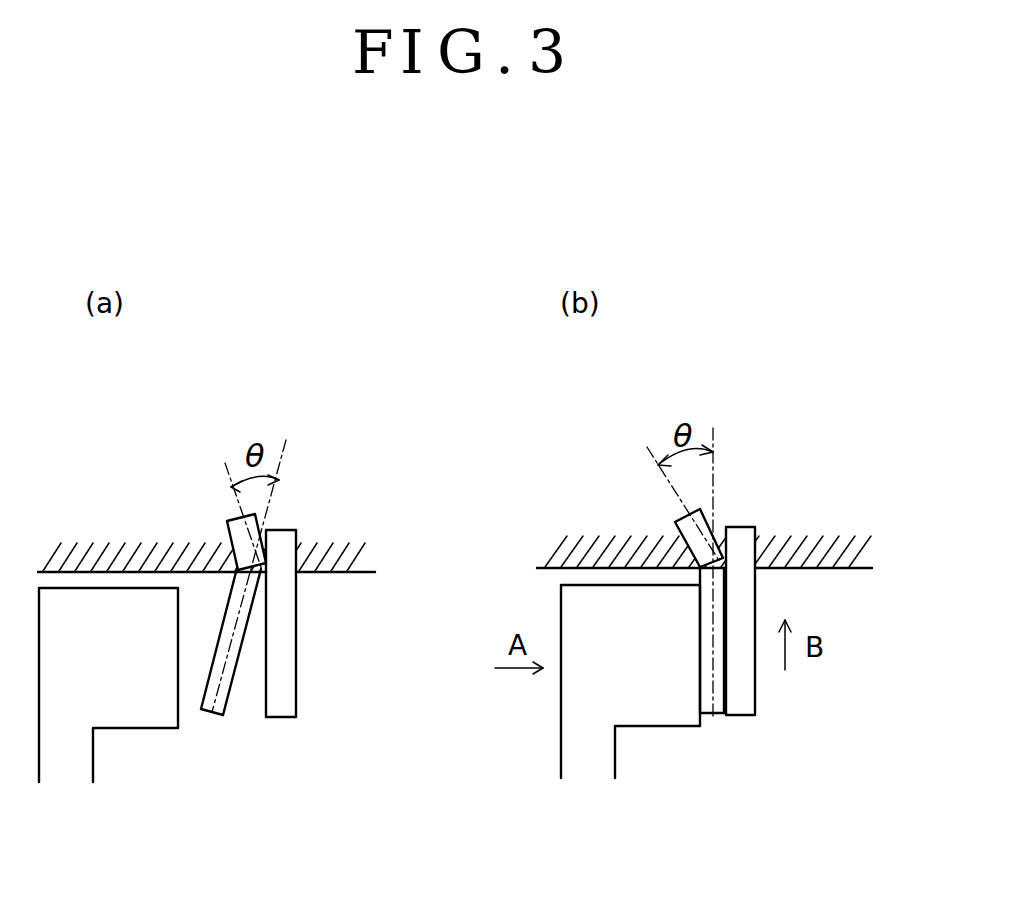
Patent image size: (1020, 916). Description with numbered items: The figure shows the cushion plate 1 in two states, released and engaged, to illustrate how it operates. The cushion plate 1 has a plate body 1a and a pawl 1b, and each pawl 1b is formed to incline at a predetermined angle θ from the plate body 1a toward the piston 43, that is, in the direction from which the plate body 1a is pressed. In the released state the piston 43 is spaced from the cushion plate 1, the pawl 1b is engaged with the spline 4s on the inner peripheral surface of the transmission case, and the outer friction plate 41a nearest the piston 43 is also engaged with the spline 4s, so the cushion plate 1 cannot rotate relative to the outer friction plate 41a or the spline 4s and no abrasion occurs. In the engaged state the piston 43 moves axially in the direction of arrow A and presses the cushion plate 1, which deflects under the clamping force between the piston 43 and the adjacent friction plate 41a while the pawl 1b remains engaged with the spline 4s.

The cushion plate 1 is at (209, 718).
The plate body 1a is at (232, 700).
The pawl 1b is at (227, 543).
The spline 4s is at (328, 562).
The outer friction plate 41a is at (283, 690).
The piston 43 is at (131, 717).